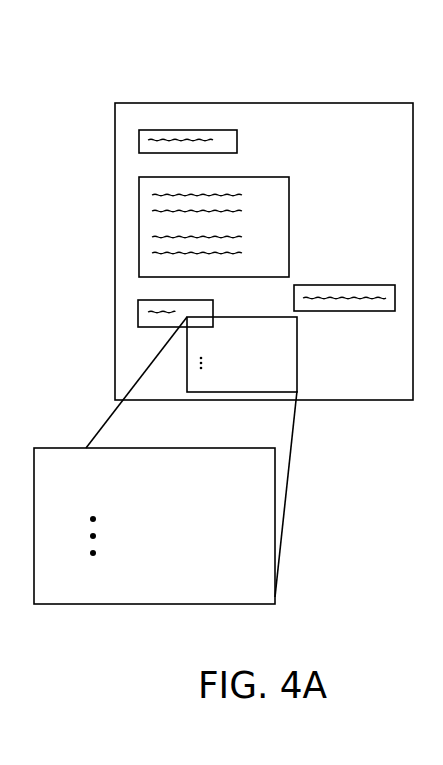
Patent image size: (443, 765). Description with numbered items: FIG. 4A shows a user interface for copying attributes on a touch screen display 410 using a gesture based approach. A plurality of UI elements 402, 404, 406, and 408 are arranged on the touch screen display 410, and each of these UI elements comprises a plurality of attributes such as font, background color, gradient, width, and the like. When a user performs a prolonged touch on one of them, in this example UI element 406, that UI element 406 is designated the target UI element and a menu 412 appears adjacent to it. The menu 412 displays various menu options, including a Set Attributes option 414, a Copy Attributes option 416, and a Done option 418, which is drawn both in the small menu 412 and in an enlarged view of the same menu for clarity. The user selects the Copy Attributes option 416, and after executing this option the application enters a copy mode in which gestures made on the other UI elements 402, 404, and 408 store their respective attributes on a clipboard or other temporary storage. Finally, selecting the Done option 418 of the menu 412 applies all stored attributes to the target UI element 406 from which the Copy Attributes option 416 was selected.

The touch screen display 410 is at (302, 103).
The UI element 402 is at (237, 143).
The UI element 404 is at (289, 197).
The UI element 406 is at (213, 300).
The UI element 408 is at (345, 285).
The menu 412 is at (297, 373).
The Set Attributes option 414 is at (258, 463).
The Copy Attributes option 416 is at (268, 493).
The Done option 418 is at (140, 582).